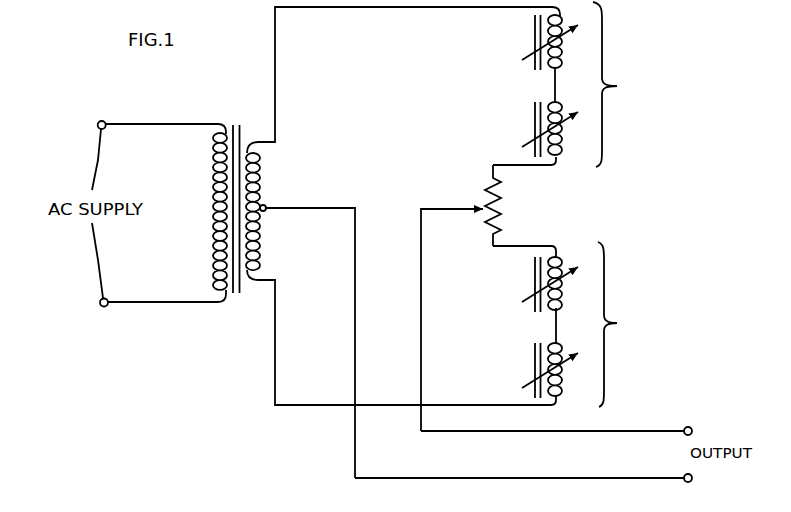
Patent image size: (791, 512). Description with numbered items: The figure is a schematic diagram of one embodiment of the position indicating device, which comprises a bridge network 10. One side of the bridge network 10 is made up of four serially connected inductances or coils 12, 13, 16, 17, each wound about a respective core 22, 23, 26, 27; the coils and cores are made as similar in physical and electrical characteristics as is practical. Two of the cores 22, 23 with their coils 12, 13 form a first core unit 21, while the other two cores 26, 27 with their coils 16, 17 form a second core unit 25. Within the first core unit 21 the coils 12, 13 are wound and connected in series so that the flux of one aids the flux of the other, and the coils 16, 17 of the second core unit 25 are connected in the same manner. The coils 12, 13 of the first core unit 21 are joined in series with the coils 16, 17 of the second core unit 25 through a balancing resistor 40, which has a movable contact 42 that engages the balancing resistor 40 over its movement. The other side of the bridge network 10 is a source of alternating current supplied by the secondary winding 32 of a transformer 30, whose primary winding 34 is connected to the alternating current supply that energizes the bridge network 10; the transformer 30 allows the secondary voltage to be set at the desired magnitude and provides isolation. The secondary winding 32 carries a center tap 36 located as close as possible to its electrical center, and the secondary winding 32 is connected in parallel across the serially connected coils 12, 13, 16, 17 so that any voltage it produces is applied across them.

The bridge network 10 is at (282, 452).
The transformer 30 is at (242, 111).
The primary winding 34 is at (213, 224).
The secondary winding 32 is at (261, 178).
The center tap 36 is at (266, 212).
The coil 12 is at (563, 57).
The core 22 is at (533, 28).
The coil 13 is at (565, 138).
The core 23 is at (533, 110).
The first core unit 21 is at (626, 92).
The balancing resistor 40 is at (486, 189).
The movable contact 42 is at (477, 213).
The coil 16 is at (566, 297).
The core 26 is at (533, 272).
The coil 17 is at (566, 380).
The core 27 is at (533, 353).
The second core unit 25 is at (626, 331).